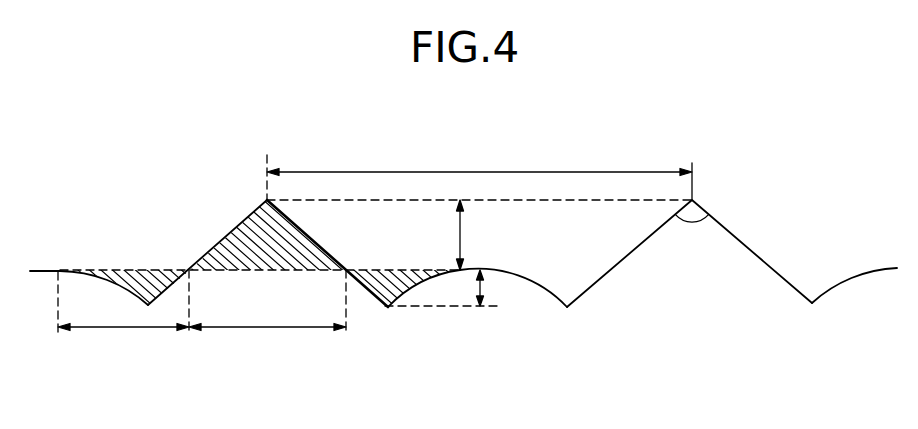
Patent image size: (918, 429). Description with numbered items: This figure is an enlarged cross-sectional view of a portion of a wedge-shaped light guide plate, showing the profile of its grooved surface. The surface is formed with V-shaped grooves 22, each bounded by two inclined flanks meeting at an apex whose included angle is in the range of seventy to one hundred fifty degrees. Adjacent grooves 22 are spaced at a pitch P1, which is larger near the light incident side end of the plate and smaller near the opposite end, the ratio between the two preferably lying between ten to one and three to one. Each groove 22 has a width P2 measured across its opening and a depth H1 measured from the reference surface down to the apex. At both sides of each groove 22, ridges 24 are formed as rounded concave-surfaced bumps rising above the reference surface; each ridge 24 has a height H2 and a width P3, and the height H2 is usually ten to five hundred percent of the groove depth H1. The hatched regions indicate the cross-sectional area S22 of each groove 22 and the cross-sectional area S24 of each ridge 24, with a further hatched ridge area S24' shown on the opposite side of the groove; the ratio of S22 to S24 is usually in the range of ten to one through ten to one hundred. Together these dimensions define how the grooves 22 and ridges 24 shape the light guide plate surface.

The groove 22 is at (653, 247).
The ridge 24 is at (556, 300).
The cross-sectional area of groove S22 is at (262, 219).
The cross-sectional area of ridge S24 is at (119, 255).
The concave surface of recess (hatched portion) S24' is at (383, 292).
The pitch between adjacent grooves P1 is at (479, 155).
The width of groove P2 is at (267, 347).
The width of ridge P3 is at (123, 349).
The depth of groove H1 is at (480, 235).
The height of ridge H2 is at (499, 291).